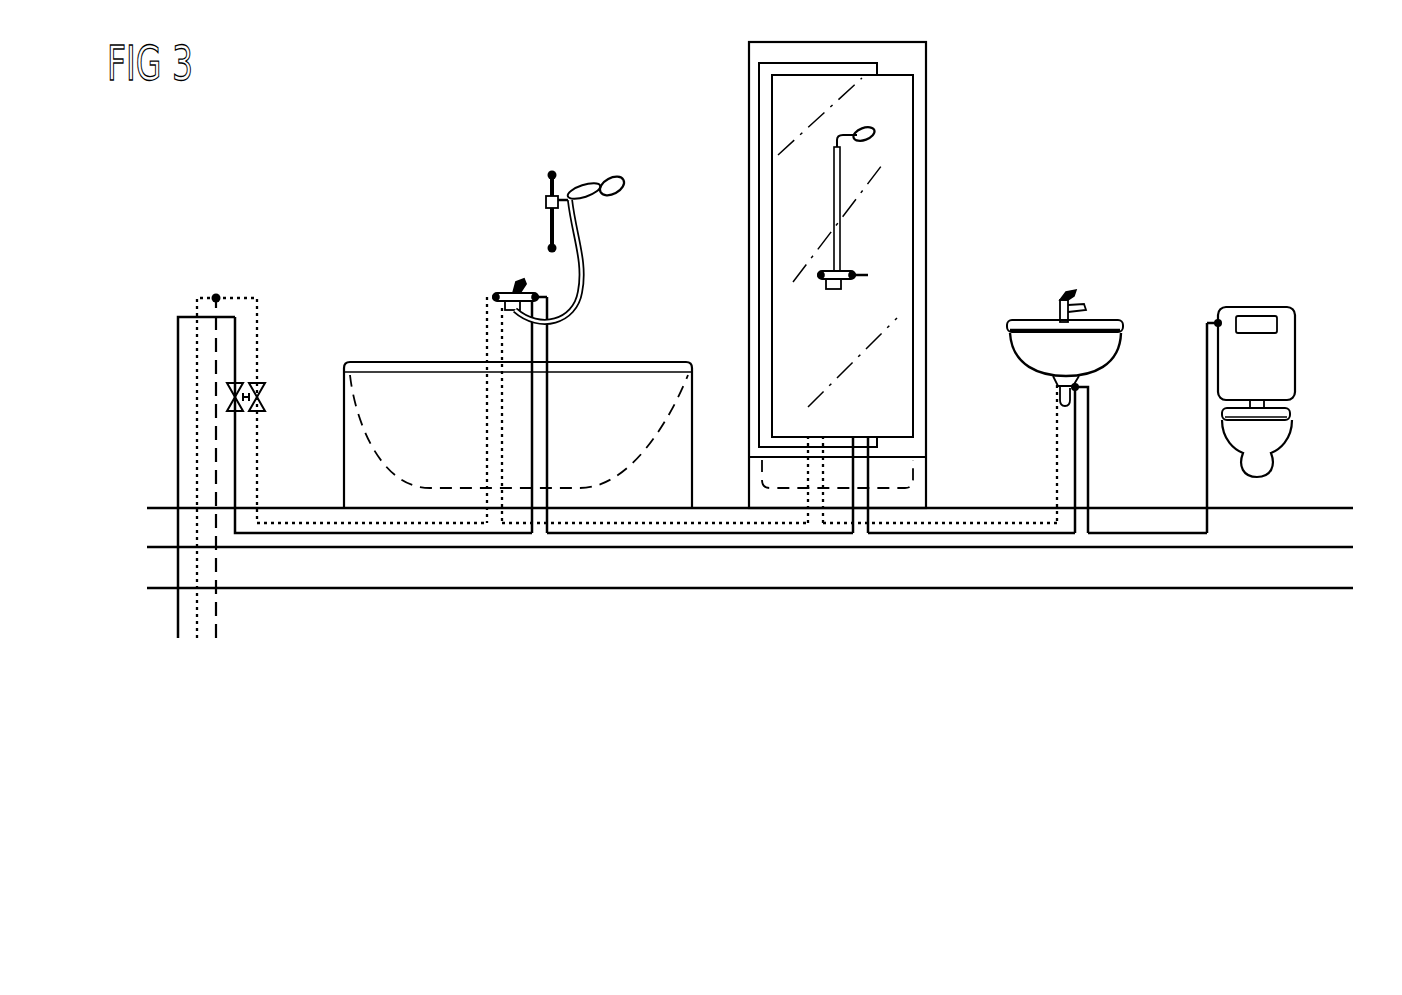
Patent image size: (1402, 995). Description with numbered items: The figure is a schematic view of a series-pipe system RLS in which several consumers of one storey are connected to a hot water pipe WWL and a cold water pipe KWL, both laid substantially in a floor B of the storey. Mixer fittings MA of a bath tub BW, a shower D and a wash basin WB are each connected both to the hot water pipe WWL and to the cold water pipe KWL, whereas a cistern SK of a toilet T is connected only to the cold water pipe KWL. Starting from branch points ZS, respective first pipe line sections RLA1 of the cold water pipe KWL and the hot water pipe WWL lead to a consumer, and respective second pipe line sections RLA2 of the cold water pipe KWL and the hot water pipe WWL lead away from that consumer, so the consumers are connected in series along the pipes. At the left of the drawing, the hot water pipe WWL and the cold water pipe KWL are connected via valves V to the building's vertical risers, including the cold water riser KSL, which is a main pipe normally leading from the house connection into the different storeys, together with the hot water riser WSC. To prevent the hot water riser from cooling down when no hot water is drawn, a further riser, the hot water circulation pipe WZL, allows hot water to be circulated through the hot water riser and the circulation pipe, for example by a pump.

The valves V is at (270, 368).
The hot water pipe WWL is at (256, 449).
The cold water pipe KWL is at (236, 469).
The cold water riser KSL is at (178, 612).
The hot water circulation pipe WZL is at (216, 612).
The warm water riser WSC is at (197, 650).
The bath tub BW is at (434, 264).
The mixer fittings MA is at (508, 280).
The first pipe line sections RLA1 is at (487, 443).
The second pipe line sections RLA2 is at (502, 397).
The branch points ZS is at (494, 524).
The shower D is at (952, 92).
The wash basin WB is at (1072, 243).
The toilet T is at (1277, 286).
The cistern SK is at (1288, 347).
The series-pipe system RLS is at (1262, 118).
The floor B is at (1355, 505).